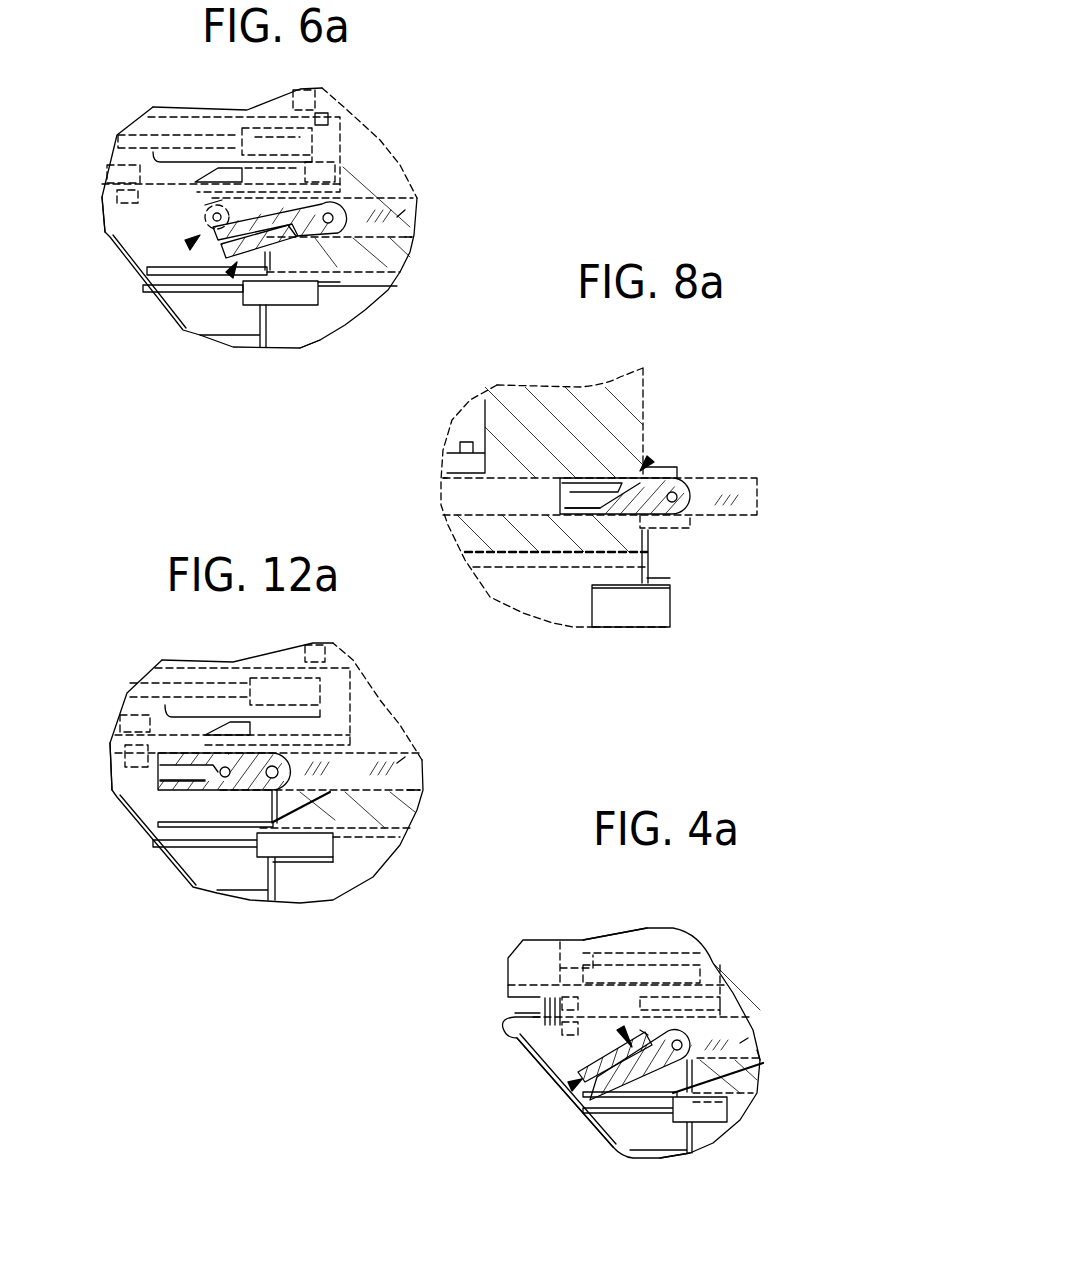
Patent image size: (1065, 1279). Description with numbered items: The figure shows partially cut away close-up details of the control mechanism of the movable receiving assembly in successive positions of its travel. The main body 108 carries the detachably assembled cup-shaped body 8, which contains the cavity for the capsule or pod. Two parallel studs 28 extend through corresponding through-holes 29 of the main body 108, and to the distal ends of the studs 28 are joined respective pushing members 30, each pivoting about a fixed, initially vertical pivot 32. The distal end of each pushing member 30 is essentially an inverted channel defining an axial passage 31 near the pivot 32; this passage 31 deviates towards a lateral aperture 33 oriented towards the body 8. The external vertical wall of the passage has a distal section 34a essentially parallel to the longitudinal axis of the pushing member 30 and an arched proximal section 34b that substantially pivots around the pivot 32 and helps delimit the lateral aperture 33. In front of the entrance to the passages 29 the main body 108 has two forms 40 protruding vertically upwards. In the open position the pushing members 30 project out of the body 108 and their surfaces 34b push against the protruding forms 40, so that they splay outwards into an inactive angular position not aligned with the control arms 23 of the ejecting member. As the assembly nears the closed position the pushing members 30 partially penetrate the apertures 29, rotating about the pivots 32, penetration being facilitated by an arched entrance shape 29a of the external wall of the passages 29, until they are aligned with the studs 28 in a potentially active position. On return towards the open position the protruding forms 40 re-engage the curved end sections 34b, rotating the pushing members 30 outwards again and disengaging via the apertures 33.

In FIG. 4a, the cup-shaped body 8 is at (660, 943).
In FIG. 6a, the control arm 23 is at (117, 212).
In FIG. 12a, the control arm 23 is at (140, 757).
In FIG. 4a, the control arm 23 is at (563, 1033).
In FIG. 6a, the stud 28 is at (394, 213).
In FIG. 8a, the stud 28 is at (740, 497).
In FIG. 12a, the stud 28 is at (397, 763).
In FIG. 4a, the stud 28 is at (740, 1043).
In FIG. 6a, the through-hole 29 is at (410, 230).
In FIG. 8a, the through-hole 29 is at (480, 480).
In FIG. 12a, the through-hole 29 is at (407, 772).
In FIG. 4a, the through-hole 29 is at (757, 1050).
In FIG. 6a, the guide surface 29a is at (327, 322).
In FIG. 6a, the pushing member 30 is at (233, 265).
In FIG. 8a, the pushing member 30 is at (655, 517).
In FIG. 12a, the pushing member 30 is at (275, 792).
In FIG. 4a, the pushing member 30 is at (633, 1097).
In FIG. 6a, the axial passage 31 is at (195, 240).
In FIG. 8a, the axial passage 31 is at (562, 487).
In FIG. 12a, the axial passage 31 is at (228, 760).
In FIG. 4a, the axial passage 31 is at (570, 1085).
In FIG. 6a, the pivot 32 is at (336, 230).
In FIG. 8a, the pivot 32 is at (680, 490).
In FIG. 12a, the pivot 32 is at (350, 785).
In FIG. 4a, the pivot 32 is at (683, 1038).
In FIG. 8a, the lateral aperture 33 is at (648, 458).
In FIG. 4a, the lateral aperture 33 is at (622, 1032).
In FIG. 6a, the distal section 34a is at (212, 238).
In FIG. 8a, the distal section 34a is at (590, 498).
In FIG. 12a, the distal section 34a is at (160, 770).
In FIG. 4a, the distal section 34a is at (605, 1080).
In FIG. 6a, the arched proximal section 34b is at (290, 210).
In FIG. 8a, the arched proximal section 34b is at (655, 512).
In FIG. 12a, the arched proximal section 34b is at (226, 765).
In FIG. 4a, the arched proximal section 34b is at (657, 1058).
In FIG. 6a, the protruding form 40 is at (213, 205).
In FIG. 12a, the protruding form 40 is at (198, 780).
In FIG. 4a, the protruding form 40 is at (640, 1030).
In FIG. 6a, the main body 108 is at (337, 265).
In FIG. 8a, the main body 108 is at (540, 410).
In FIG. 12a, the main body 108 is at (337, 877).
In FIG. 4a, the main body 108 is at (663, 1133).